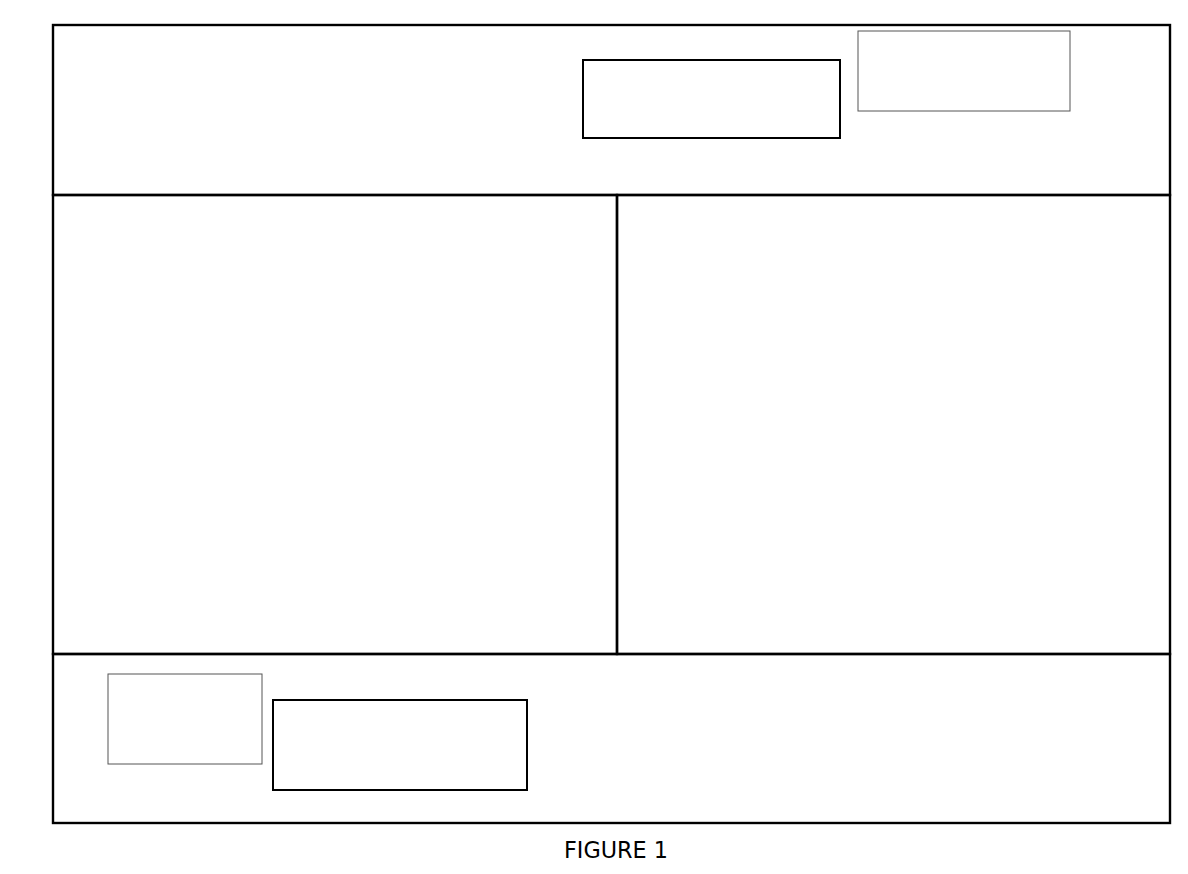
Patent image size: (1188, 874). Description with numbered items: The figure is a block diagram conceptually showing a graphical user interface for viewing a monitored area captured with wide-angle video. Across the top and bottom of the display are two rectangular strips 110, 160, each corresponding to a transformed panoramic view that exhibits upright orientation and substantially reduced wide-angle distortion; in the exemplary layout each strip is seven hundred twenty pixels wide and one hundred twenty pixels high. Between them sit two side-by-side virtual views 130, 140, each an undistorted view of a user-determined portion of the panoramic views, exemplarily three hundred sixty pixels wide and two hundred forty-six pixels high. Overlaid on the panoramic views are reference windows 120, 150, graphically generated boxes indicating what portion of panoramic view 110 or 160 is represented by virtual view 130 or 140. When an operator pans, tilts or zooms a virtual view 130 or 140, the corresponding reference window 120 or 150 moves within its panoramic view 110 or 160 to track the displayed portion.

The panoramic view strip 110 is at (611, 110).
The reference window 120 is at (842, 93).
The virtual view 130 is at (335, 424).
The virtual view 140 is at (893, 424).
The reference window 150 is at (273, 733).
The panoramic view strip 160 is at (611, 738).